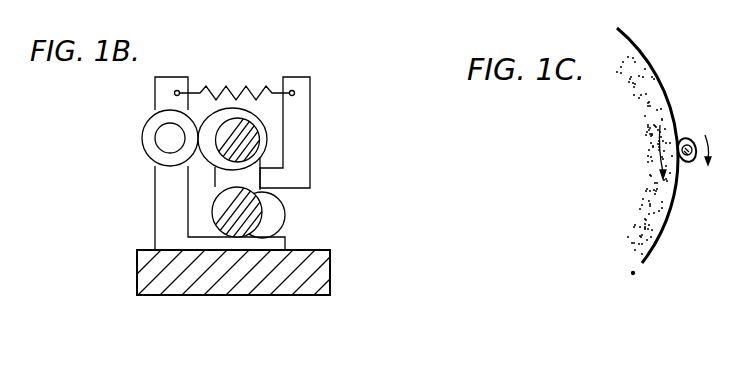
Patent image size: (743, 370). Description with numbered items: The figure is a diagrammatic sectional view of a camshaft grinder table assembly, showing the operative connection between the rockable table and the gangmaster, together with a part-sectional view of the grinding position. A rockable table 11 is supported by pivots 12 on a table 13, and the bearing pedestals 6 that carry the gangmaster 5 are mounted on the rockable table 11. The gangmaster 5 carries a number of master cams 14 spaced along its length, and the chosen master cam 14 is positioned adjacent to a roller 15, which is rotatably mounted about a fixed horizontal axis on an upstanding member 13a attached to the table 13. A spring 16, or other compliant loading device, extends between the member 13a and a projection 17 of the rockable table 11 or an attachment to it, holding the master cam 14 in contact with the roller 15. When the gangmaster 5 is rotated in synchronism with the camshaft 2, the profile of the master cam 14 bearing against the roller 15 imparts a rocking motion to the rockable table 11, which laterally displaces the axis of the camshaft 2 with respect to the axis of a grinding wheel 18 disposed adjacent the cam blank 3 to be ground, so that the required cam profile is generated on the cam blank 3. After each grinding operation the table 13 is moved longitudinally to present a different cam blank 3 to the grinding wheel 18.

In FIG. 1C, the camshaft 2 is at (689, 162).
In FIG. 1C, the cam blank 3 is at (693, 139).
In FIG. 1B, the gangmaster 5 is at (253, 139).
In FIG. 1B, the bearing pedestal 6 is at (247, 177).
In FIG. 1B, the rockable table 11 is at (243, 213).
In FIG. 1B, the pivot 12 is at (285, 206).
In FIG. 1B, the table 13 is at (320, 267).
In FIG. 1B, the upstanding member 13a is at (160, 186).
In FIG. 1B, the master cam 14 is at (265, 123).
In FIG. 1B, the roller 15 is at (143, 128).
In FIG. 1B, the spring 16 is at (233, 89).
In FIG. 1B, the projection 17 is at (306, 161).
In FIG. 1C, the grinding wheel 18 is at (642, 72).